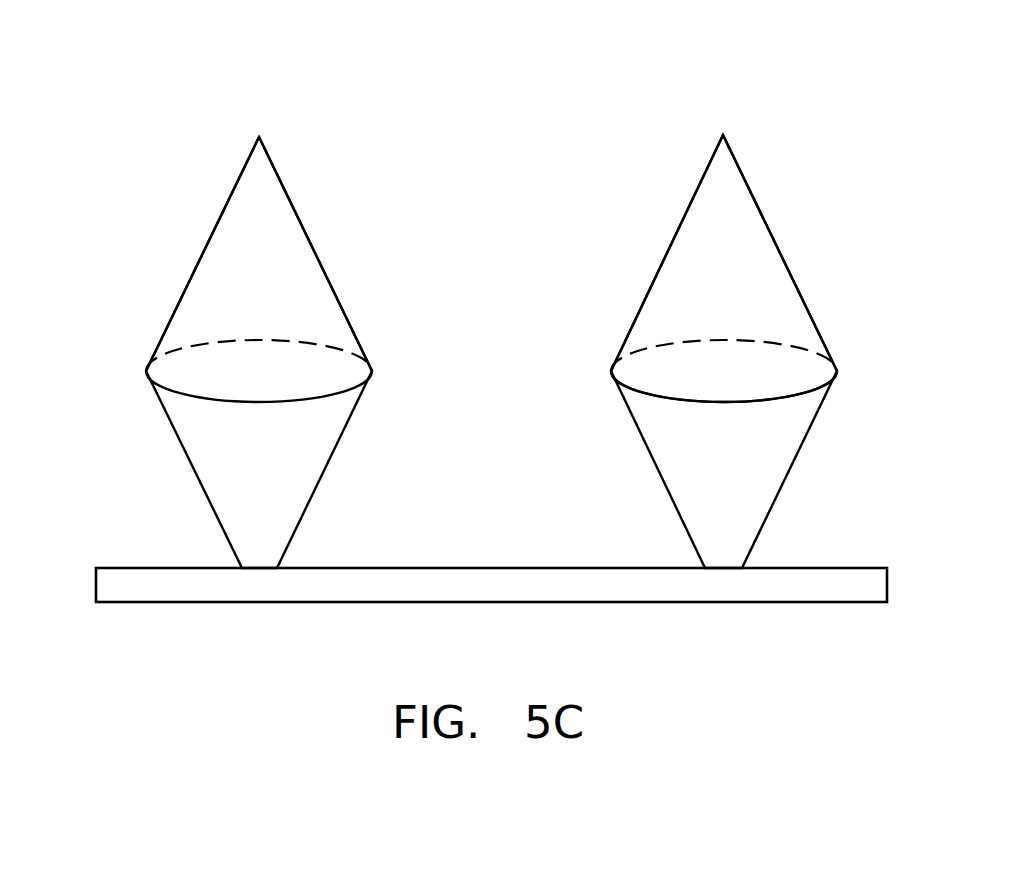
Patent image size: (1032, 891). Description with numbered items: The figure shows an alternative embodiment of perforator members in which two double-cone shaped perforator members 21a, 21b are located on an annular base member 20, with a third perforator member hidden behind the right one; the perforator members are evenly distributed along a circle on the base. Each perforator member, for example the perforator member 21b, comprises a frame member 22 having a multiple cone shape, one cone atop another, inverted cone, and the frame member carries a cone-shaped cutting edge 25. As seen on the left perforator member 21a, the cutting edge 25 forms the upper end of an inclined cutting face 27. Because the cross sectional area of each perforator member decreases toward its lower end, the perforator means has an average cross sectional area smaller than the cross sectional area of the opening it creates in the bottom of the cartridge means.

The annular base member 20 is at (460, 585).
The perforator member 21a is at (158, 479).
The perforator member 21b is at (600, 479).
The frame member 22 is at (793, 392).
The cutting edge 25 is at (762, 208).
The cutting face 27 is at (259, 137).